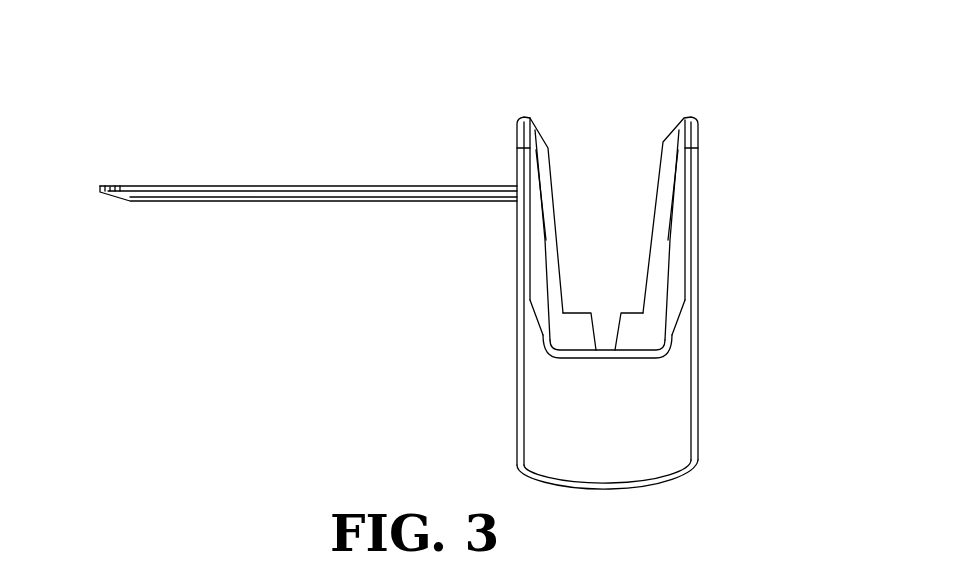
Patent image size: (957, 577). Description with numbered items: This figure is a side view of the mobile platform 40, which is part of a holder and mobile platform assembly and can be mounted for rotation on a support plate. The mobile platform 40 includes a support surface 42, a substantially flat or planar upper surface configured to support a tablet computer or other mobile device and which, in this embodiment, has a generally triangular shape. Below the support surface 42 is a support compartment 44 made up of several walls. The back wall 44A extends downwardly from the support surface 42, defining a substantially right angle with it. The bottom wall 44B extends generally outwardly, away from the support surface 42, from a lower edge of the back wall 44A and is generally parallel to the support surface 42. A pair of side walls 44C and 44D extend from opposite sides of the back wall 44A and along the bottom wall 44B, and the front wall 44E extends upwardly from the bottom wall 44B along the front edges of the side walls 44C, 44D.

The mobile platform 40 is at (699, 58).
The support surface 42 is at (307, 185).
The support compartment 44 is at (588, 118).
The back wall 44A is at (517, 383).
The bottom wall 44B is at (612, 490).
The side wall 44C is at (622, 450).
The side wall 44D is at (578, 312).
The front wall 44E is at (698, 378).